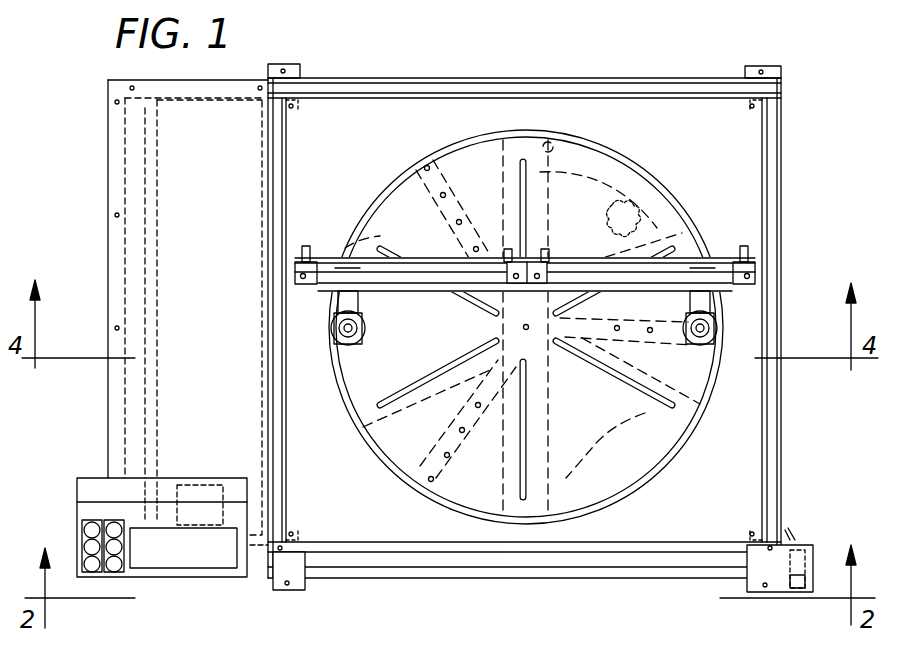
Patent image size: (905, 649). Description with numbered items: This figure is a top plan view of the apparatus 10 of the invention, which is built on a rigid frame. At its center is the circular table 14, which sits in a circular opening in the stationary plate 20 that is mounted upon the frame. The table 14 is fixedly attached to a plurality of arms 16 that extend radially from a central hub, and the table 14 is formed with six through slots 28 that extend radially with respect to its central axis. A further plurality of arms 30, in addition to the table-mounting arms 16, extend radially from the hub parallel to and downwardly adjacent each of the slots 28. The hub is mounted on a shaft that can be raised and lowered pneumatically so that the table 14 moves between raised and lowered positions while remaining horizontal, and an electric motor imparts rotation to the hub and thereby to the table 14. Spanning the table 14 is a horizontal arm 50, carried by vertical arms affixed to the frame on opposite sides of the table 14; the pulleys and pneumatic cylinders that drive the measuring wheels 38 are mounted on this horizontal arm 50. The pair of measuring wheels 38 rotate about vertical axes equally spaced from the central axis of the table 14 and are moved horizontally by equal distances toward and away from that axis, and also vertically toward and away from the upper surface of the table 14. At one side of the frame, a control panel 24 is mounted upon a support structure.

The apparatus 10 is at (655, 70).
The circular table 14 is at (600, 160).
The arms 16 is at (465, 205).
The stationary plate 20 is at (405, 108).
The control panel 24 is at (130, 575).
The through slots 28 is at (538, 230).
The arms 30 is at (640, 205).
The measuring wheels 38 is at (370, 320).
The horizontal arm 50 is at (425, 272).